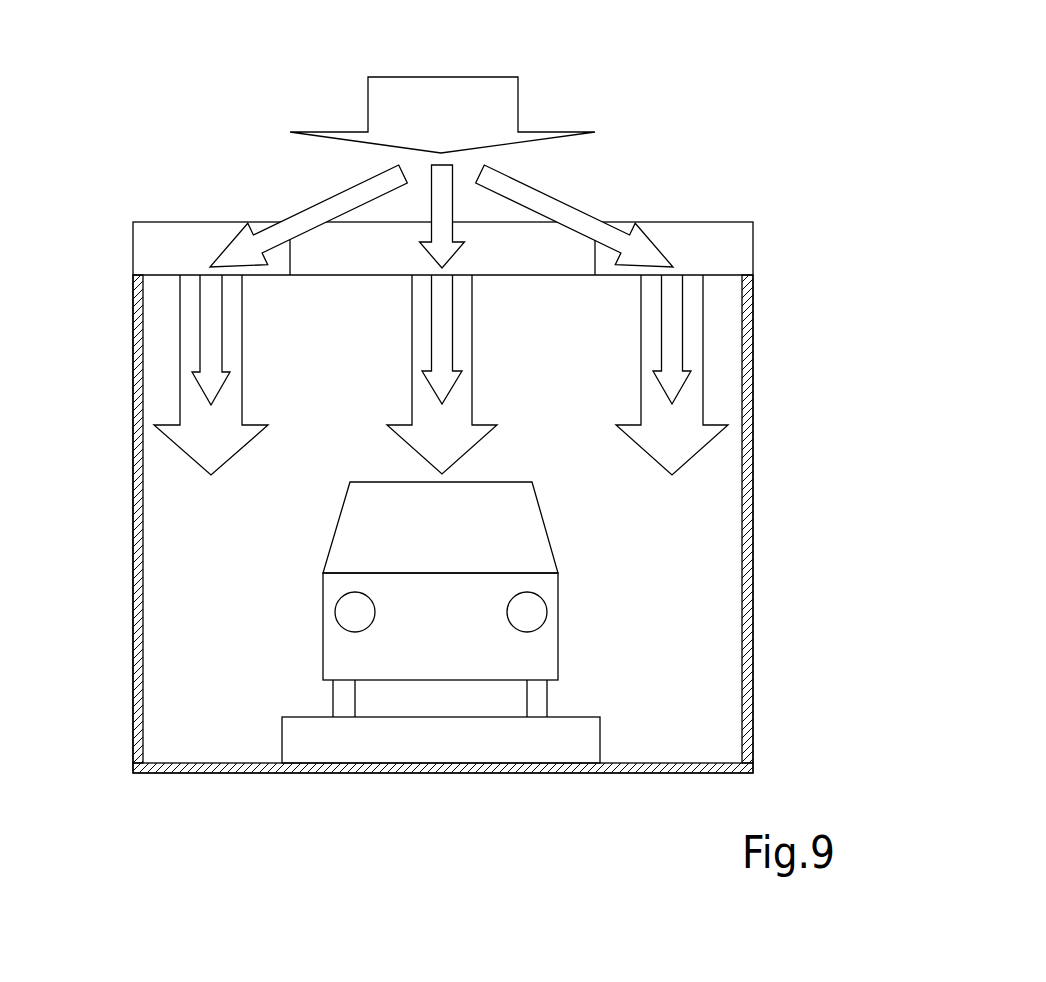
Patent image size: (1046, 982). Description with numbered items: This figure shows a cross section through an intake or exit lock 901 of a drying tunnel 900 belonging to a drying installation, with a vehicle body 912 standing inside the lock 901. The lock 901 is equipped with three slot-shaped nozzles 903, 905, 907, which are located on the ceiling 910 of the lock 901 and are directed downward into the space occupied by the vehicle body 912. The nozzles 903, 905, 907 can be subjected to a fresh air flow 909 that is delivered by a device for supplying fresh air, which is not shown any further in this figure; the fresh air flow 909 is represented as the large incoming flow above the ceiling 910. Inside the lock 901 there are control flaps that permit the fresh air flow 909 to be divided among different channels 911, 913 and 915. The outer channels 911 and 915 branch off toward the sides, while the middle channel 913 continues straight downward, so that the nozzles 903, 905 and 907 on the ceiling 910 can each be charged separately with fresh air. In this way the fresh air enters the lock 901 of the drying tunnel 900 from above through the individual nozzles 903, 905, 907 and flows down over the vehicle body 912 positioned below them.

The drying tunnel 900 is at (243, 586).
The intake or exit lock 901 is at (730, 108).
The slot-shaped nozzle 903 is at (163, 275).
The slot-shaped nozzle 905 is at (360, 275).
The slot-shaped nozzle 907 is at (720, 275).
The fresh air flow 909 is at (442, 77).
The ceiling 910 is at (520, 275).
The channel 911 is at (317, 203).
The vehicle body 912 is at (558, 628).
The channel 913 is at (440, 172).
The channel 915 is at (567, 202).